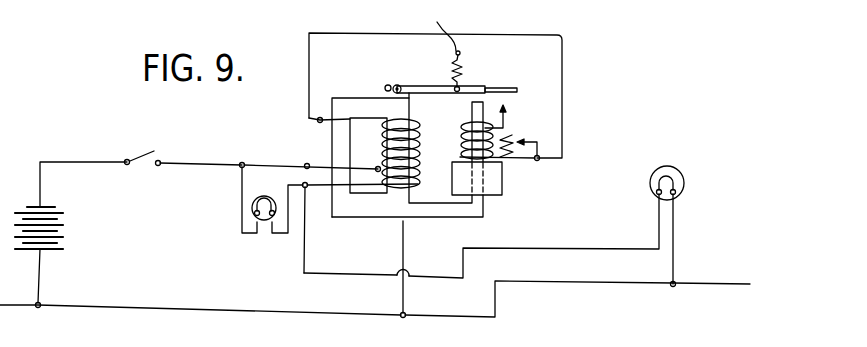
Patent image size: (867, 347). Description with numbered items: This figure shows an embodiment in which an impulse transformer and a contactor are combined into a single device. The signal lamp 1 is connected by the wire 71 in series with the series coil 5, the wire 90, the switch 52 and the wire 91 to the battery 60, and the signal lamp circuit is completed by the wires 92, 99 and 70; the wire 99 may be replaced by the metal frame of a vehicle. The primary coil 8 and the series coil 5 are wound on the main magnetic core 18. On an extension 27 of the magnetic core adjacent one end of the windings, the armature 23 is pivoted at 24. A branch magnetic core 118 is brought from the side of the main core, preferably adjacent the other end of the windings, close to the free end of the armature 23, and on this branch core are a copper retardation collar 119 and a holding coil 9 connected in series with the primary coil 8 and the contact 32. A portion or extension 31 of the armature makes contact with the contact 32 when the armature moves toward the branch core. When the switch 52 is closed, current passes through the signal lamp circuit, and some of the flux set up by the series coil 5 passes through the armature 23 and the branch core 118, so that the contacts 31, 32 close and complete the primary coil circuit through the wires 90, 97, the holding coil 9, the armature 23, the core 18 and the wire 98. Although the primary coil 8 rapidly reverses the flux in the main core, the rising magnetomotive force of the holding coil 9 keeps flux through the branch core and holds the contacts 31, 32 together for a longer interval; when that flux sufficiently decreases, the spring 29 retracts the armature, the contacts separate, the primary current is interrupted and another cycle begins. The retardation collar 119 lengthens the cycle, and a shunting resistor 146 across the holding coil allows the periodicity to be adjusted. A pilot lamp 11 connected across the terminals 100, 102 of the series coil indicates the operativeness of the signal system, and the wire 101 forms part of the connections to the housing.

The electric signal lamp 1 is at (685, 180).
The series coil 5 is at (417, 182).
The primary coil 8 is at (421, 143).
The holding coil 9 is at (482, 150).
The pilot lamp 11 is at (252, 208).
The main magnetic core 18 is at (352, 103).
The armature 23 is at (469, 85).
The pivot 24 is at (386, 85).
The extension of the magnetic core 27 is at (401, 84).
The spring 29 is at (437, 26).
The armature contact extension 31 is at (506, 88).
The contact 32 is at (506, 119).
The switch 52 is at (146, 152).
The battery 60 is at (28, 206).
The wire 70 is at (675, 240).
The wire 71 is at (577, 248).
The wire 90 is at (200, 163).
The wire 91 is at (73, 161).
The wire 92 is at (42, 281).
The wire 97 is at (308, 74).
The wire 98 is at (405, 295).
The wire 99 is at (211, 311).
The terminal of the series coil 100 is at (306, 164).
The conductor 101 is at (318, 121).
The terminal of the series coil 102 is at (308, 190).
The branch magnetic core 118 is at (472, 110).
The retardation collar 119 is at (500, 193).
The shunting resistor 146 is at (520, 155).